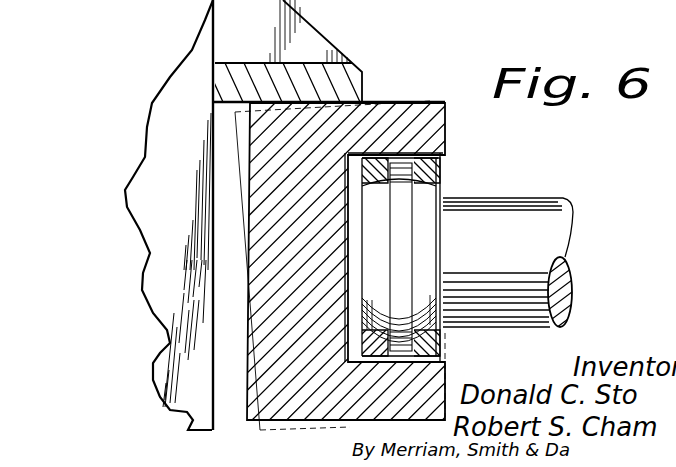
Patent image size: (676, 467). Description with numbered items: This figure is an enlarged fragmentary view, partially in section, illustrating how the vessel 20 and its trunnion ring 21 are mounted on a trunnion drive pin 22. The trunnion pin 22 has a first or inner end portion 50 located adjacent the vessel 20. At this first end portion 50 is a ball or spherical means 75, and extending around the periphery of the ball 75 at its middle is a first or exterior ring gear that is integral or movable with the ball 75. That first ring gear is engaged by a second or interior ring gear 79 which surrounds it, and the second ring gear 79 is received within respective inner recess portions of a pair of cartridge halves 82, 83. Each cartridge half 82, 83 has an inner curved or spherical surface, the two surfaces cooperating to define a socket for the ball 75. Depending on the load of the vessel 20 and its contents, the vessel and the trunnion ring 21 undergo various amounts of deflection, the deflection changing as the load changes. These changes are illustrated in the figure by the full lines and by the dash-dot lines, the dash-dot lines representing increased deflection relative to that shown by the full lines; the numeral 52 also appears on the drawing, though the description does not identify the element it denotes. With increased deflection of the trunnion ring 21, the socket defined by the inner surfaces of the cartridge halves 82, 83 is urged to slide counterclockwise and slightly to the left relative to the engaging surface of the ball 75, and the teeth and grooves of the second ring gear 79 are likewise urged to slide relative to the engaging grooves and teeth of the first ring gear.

The vessel 20 is at (160, 152).
The trunnion ring 21 is at (445, 127).
The trunnion pin 22 is at (545, 198).
The first end portion 50 is at (415, 223).
The phantom outline 52 is at (405, 147).
The ball 75 is at (423, 208).
The second ring gear 79 is at (397, 273).
The cartridge half 82 is at (375, 160).
The cartridge half 83 is at (440, 172).